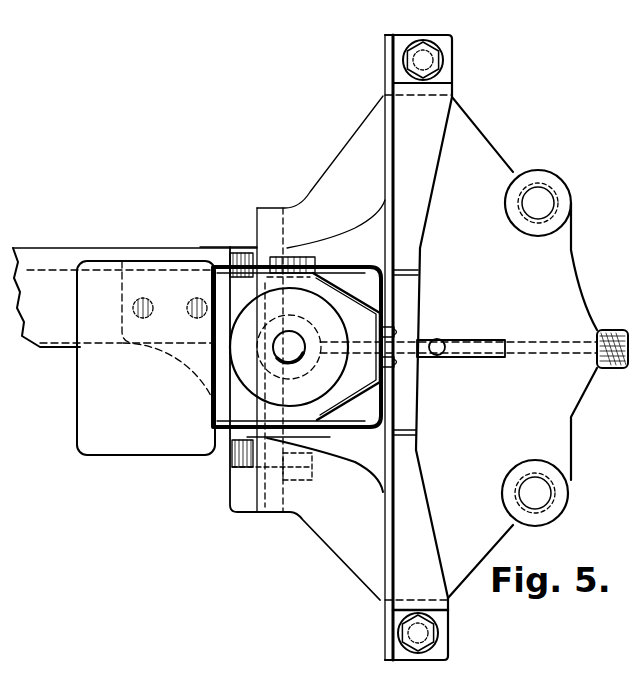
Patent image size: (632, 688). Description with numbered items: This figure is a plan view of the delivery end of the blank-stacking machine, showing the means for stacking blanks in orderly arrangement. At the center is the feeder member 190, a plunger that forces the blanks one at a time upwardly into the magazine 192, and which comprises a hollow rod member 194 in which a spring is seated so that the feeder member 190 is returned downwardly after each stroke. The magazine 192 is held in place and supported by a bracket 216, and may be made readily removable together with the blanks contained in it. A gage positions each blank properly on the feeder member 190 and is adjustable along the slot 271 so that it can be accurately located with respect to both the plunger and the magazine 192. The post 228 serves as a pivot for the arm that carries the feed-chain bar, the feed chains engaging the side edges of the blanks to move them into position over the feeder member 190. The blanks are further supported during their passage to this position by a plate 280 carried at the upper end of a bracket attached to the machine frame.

The feeder member 190 is at (323, 305).
The magazine 192 is at (208, 420).
The hollow rod member 194 is at (297, 355).
The bracket 216 is at (407, 290).
The slot 271 is at (473, 347).
The post 228 is at (540, 493).
The plate 280 is at (123, 440).